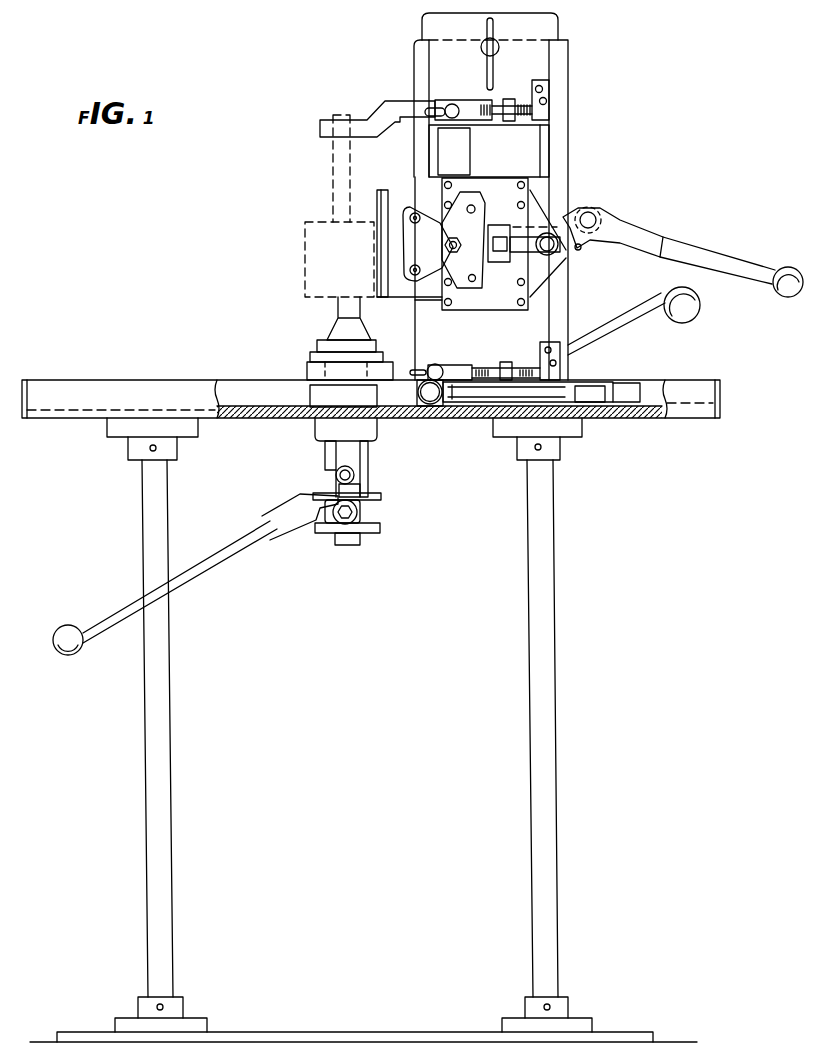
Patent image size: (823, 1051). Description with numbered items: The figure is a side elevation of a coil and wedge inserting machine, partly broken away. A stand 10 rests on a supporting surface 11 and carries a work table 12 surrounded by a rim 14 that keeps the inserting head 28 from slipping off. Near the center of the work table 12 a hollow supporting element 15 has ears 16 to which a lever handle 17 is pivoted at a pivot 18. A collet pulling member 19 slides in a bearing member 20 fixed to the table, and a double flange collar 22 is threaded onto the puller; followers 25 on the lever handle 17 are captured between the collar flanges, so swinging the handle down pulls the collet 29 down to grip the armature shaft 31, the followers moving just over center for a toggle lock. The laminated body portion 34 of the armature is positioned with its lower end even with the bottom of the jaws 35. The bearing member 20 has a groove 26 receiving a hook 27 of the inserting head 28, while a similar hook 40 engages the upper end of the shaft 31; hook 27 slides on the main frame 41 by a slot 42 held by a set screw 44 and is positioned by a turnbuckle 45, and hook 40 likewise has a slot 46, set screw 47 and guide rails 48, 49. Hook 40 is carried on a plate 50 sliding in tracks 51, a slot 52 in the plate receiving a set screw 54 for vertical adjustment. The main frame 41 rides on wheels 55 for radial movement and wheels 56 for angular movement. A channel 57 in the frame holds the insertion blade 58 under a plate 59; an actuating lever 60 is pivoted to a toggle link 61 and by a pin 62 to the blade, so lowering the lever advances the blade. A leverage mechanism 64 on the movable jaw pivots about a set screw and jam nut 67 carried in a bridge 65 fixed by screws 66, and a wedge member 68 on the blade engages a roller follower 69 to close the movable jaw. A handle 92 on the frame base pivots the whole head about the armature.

The stand 10 is at (532, 668).
The supporting surface 11 is at (678, 1040).
The work table 12 is at (646, 420).
The rim 14 is at (721, 382).
The hollow supporting element 15 is at (378, 428).
The ears 16 is at (324, 455).
The lever handle 17 is at (103, 620).
The pivot 18 is at (345, 466).
The collet pulling member 19 is at (369, 481).
The bearing member 20 is at (369, 458).
The double flange collar 22 is at (380, 531).
The followers 25 is at (358, 514).
The groove 26 is at (378, 388).
The hook 27 is at (309, 368).
The inserting head 28 is at (570, 128).
The collet 29 is at (320, 352).
The armature shaft 31 is at (333, 170).
The laminated body portion 34 is at (304, 240).
The jaws 35 is at (337, 308).
The hook 40 is at (319, 128).
The main frame 41 is at (414, 337).
The slot 42 is at (426, 368).
The set screw 44 is at (443, 366).
The turnbuckle 45 is at (506, 361).
The slot 46 is at (435, 108).
The set screw 47 is at (452, 104).
The guide rail 48 is at (467, 99).
The guide rail and turnbuckle 49 is at (508, 99).
The plate 50 is at (556, 22).
The tracks 51 is at (420, 55).
The slot 52 is at (486, 27).
The set screw 54 is at (494, 43).
The wheels 55 is at (433, 398).
The wheels 56 is at (612, 420).
The channel 57 is at (576, 187).
The insertion blade 58 is at (385, 190).
The plate 59 is at (497, 300).
The actuating lever 60 is at (641, 230).
The toggle link 61 is at (581, 250).
The pin 62 is at (556, 254).
The leverage mechanism 64 is at (433, 215).
The bridge 65 is at (460, 202).
The screws 66 is at (475, 209).
The set screw and jam nut 67 is at (449, 243).
The wedge member 68 is at (513, 252).
The roller follower 69 is at (505, 228).
The handle 92 is at (638, 330).